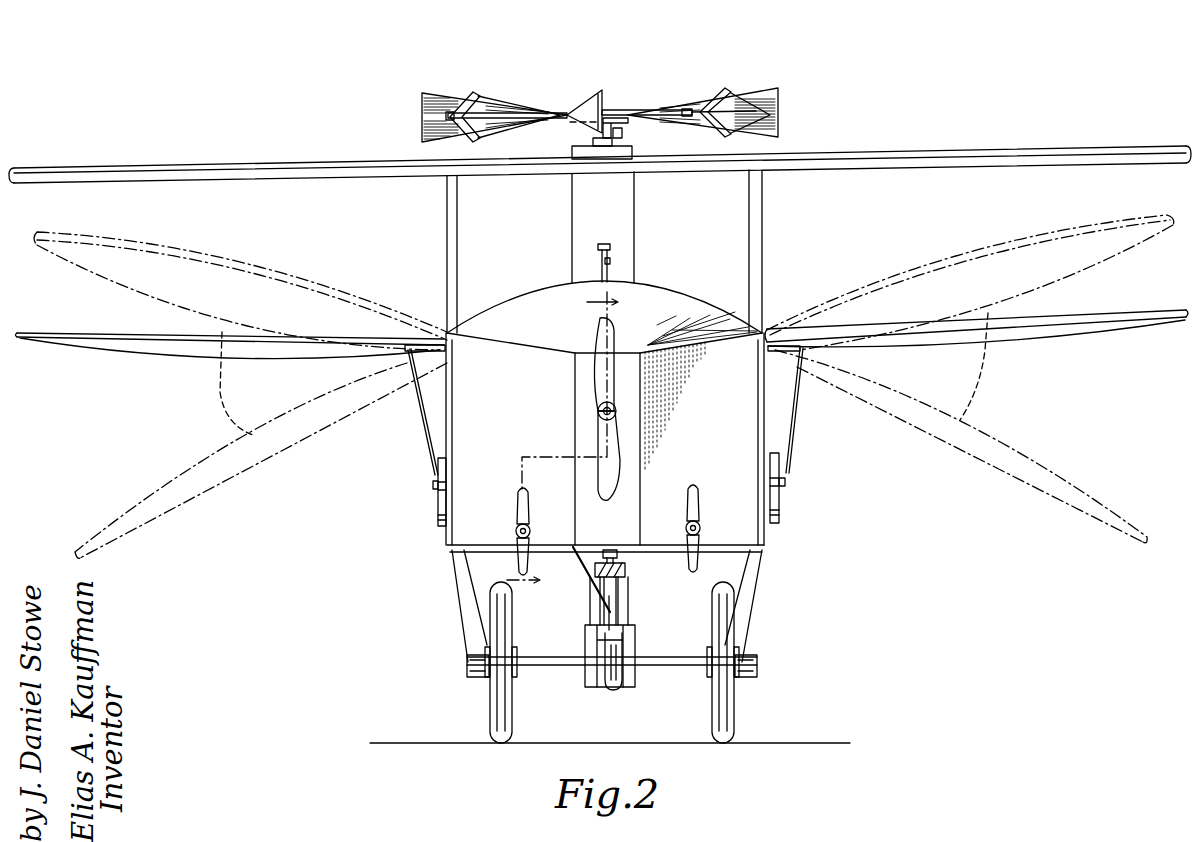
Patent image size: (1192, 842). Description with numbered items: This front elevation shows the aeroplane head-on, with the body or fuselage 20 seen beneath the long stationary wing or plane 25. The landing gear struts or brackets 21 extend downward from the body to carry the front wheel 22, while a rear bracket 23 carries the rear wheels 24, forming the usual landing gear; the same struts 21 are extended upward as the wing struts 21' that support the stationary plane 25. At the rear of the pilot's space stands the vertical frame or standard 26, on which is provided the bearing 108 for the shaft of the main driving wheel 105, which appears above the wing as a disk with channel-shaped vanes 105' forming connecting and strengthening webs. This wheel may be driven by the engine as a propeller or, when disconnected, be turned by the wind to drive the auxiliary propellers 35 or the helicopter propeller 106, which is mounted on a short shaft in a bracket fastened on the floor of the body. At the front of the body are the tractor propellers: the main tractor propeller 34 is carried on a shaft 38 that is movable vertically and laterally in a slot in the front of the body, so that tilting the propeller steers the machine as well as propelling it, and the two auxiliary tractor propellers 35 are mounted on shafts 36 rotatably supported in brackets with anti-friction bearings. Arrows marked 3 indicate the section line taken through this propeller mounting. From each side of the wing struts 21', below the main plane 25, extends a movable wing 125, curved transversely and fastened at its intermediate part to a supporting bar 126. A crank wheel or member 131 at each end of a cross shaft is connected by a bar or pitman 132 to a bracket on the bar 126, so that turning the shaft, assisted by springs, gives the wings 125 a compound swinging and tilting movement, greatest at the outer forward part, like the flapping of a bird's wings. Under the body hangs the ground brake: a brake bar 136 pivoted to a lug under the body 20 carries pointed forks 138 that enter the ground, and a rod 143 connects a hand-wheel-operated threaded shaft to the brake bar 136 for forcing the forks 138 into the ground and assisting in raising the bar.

The body or fuselage 20 is at (755, 445).
The landing gear struts or brackets 21 is at (615, 606).
The wing struts 21' is at (609, 251).
The front wheel 22 is at (497, 700).
The rear bracket 23 is at (632, 605).
The rear wheels 24 is at (614, 650).
The stationary wing or plane 25 is at (856, 161).
The vertical frame or standard 26 is at (636, 226).
The main tractor propeller 34 is at (592, 365).
The auxiliary tractor propellers 35 is at (517, 553).
The shafts 36 is at (516, 530).
The shaft 38 is at (598, 411).
The main driving wheel 105 is at (535, 116).
The channel-shaped vanes 105' is at (690, 96).
The helicopter propeller 106 is at (627, 570).
The bearing 108 is at (601, 244).
The wings 125 is at (243, 353).
The supporting bar 126 is at (413, 360).
The crank wheel or member 131 is at (437, 510).
The bar or pitman 132 is at (425, 437).
The brake bar 136 is at (606, 617).
The pointed forks 138 is at (622, 688).
The rod 143 is at (578, 570).
The section line 3- 3 is at (572, 444).